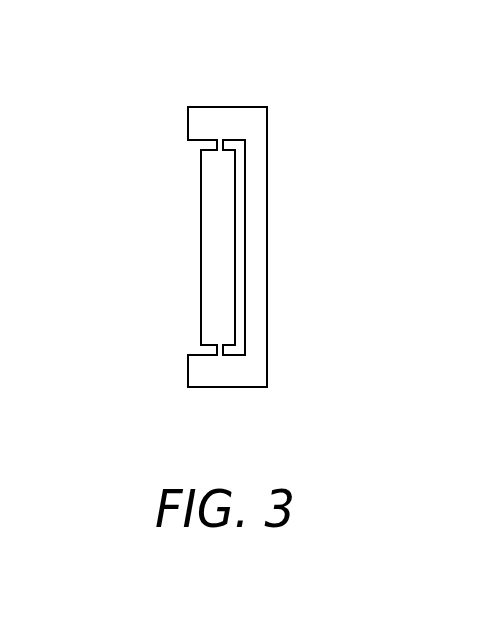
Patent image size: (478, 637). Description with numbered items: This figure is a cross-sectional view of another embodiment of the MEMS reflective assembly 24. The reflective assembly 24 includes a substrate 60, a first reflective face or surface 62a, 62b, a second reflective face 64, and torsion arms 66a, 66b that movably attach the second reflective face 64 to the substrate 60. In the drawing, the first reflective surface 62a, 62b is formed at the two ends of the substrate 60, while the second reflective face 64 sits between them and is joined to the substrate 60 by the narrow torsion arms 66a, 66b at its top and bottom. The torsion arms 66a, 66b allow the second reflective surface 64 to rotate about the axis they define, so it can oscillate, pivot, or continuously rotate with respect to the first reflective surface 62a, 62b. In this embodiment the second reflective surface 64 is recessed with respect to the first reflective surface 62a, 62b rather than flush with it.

The reflective assembly 24 is at (303, 50).
The substrate 60 is at (267, 181).
The second reflective face 64 is at (201, 247).
The first reflective face 62a is at (188, 120).
The first reflective face 62b is at (188, 368).
The torsion arm 66a is at (217, 142).
The torsion arm 66b is at (217, 350).